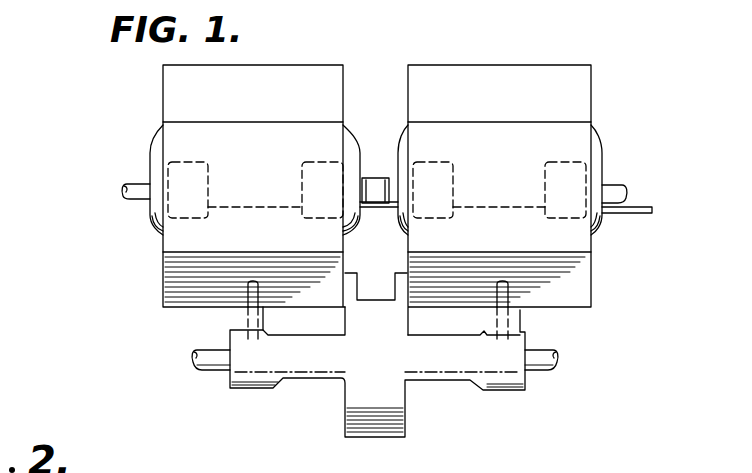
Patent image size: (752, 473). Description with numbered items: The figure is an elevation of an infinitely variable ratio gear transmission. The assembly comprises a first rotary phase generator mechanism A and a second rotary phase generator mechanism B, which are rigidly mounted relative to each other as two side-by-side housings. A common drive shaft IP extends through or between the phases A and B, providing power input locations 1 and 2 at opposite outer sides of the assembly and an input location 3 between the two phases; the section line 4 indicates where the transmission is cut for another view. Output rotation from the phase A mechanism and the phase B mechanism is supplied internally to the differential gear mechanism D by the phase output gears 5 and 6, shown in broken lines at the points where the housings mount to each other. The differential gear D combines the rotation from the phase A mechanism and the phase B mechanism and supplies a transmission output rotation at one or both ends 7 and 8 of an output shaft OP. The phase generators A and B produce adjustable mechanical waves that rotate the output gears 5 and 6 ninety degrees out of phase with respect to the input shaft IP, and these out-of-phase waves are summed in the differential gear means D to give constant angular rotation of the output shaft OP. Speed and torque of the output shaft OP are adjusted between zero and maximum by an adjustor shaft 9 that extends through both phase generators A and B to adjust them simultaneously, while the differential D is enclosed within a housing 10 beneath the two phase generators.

The power input location 1 is at (137, 182).
The power input location 2 is at (622, 188).
The input location 3 is at (372, 207).
The section line 4- 4 is at (83, 188).
The phase output gear 5 is at (240, 318).
The phase output gear 6 is at (520, 318).
The output shaft end 7 is at (210, 374).
The output shaft end 8 is at (550, 372).
The adjustor shaft 9 is at (636, 215).
The housing 10 is at (404, 393).
The first rotary phase generator mechanism A is at (163, 283).
The second rotary phase generator mechanism B is at (591, 86).
The common drive shaft IP is at (126, 203).
The output shaft OP is at (191, 365).
The differential gear mechanism D is at (351, 436).